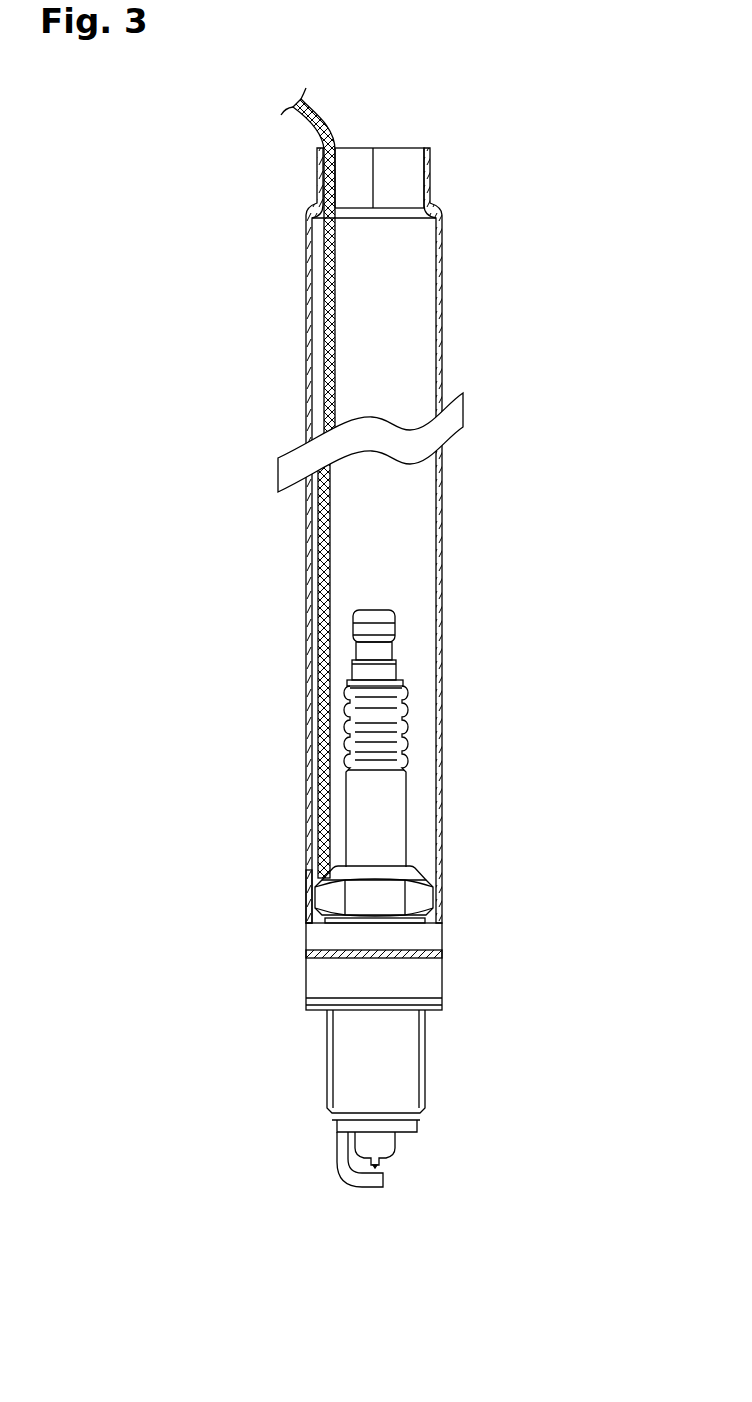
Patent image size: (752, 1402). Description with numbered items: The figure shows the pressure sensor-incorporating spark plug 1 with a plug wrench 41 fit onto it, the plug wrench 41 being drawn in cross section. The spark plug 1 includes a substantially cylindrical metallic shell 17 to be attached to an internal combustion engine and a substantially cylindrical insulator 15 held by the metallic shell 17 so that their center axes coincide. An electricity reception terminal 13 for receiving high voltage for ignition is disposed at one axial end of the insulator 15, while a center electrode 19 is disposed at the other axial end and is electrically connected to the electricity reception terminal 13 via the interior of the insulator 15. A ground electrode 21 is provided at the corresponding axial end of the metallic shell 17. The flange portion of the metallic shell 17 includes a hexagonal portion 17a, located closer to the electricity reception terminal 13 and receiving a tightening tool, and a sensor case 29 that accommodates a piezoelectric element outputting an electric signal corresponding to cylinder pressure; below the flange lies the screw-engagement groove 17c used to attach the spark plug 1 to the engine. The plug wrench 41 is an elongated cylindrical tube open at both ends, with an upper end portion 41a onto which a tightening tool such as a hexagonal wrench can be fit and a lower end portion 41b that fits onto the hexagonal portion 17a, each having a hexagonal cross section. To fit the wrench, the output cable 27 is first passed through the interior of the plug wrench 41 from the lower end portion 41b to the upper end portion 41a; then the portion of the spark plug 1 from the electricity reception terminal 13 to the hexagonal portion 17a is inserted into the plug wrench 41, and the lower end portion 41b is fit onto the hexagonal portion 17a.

The pressure sensor-incorporating spark plug 1 is at (413, 932).
The electricity reception terminal 13 is at (390, 630).
The insulator 15 is at (390, 793).
The metallic shell 17 is at (413, 999).
The hexagonal portion 17a is at (418, 897).
The screw-engagement groove 17c is at (439, 1071).
The center electrode 19 is at (378, 1163).
The ground electrode 21 is at (362, 1188).
The output cable 27 is at (328, 306).
The sensor case 29 is at (328, 979).
The plug wrench 41 is at (374, 535).
The upper end portion 41a is at (430, 182).
The lower end portion 41b is at (306, 904).